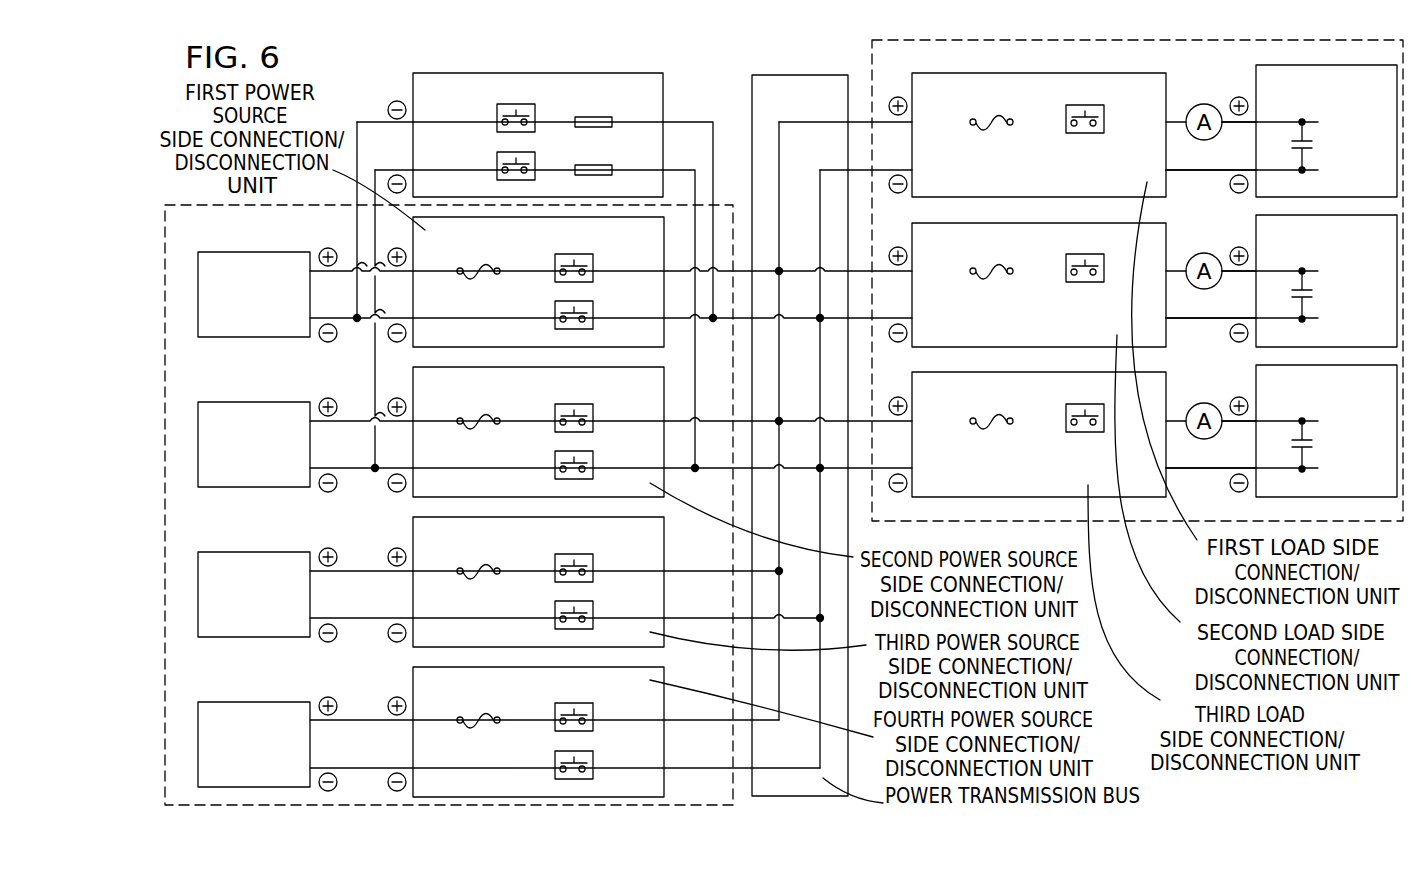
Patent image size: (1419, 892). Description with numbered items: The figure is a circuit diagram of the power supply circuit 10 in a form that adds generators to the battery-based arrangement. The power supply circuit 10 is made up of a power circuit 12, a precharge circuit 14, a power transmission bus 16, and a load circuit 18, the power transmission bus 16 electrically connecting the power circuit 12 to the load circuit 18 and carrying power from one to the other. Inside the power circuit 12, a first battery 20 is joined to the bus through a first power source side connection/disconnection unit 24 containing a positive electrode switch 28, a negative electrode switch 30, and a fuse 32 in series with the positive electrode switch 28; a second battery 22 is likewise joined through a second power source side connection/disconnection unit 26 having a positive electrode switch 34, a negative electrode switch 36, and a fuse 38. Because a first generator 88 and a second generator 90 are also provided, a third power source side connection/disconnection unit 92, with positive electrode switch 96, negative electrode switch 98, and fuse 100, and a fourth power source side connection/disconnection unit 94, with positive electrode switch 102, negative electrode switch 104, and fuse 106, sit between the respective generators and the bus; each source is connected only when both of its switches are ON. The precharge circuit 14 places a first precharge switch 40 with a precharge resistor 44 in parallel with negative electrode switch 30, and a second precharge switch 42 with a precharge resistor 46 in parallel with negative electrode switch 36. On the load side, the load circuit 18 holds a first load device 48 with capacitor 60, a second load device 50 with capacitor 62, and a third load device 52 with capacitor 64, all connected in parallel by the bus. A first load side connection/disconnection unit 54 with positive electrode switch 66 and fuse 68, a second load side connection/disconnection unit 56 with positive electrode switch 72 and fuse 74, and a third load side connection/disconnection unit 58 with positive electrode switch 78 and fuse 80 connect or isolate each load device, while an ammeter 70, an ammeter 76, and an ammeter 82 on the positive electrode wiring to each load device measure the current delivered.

The power supply circuit 10 is at (379, 72).
The power circuit 12 is at (678, 204).
The precharge circuit 14 is at (612, 73).
The power transmission bus 16 is at (764, 75).
The load circuit 18 is at (872, 57).
The first battery 20 is at (260, 338).
The second battery 22 is at (255, 402).
The first power source side connection/disconnection unit 24 is at (412, 233).
The second power source side connection/disconnection unit 26 is at (412, 383).
The positive electrode switch 28 is at (594, 268).
The negative electrode switch 30 is at (594, 316).
The fuse 32 is at (471, 280).
The positive electrode switch 34 is at (594, 418).
The negative electrode switch 36 is at (594, 466).
The fuse 38 is at (471, 430).
The first precharge switch 40 is at (497, 117).
The second precharge switch 42 is at (497, 165).
The precharge resistor 44 is at (605, 118).
The precharge resistor 46 is at (605, 166).
The first load device 48 is at (1256, 154).
The second load device 50 is at (1256, 304).
The third load device 52 is at (1256, 454).
The first load side connection/disconnection unit 54 is at (1166, 93).
The second load side connection/disconnection unit 56 is at (1166, 243).
The third load side connection/disconnection unit 58 is at (1166, 393).
The capacitor 60 is at (1312, 146).
The capacitor 62 is at (1312, 296).
The capacitor 64 is at (1312, 446).
The positive electrode switch 66 is at (1087, 133).
The fuse 68 is at (984, 131).
The ammeter 70 is at (1200, 141).
The positive electrode switch 72 is at (1087, 282).
The fuse 74 is at (984, 280).
The ammeter 76 is at (1200, 290).
The positive electrode switch 78 is at (1090, 432).
The fuse 80 is at (984, 430).
The ammeter 82 is at (1200, 440).
The first generator 88 is at (260, 638).
The second generator 90 is at (255, 702).
The third power source side connection/disconnection unit 92 is at (412, 530).
The fourth power source side connection/disconnection unit 94 is at (412, 680).
The positive electrode switch 96 is at (594, 568).
The negative electrode switch 98 is at (594, 616).
The fuse 100 is at (471, 580).
The positive electrode switch 102 is at (594, 718).
The negative electrode switch 104 is at (594, 766).
The fuse 106 is at (471, 729).